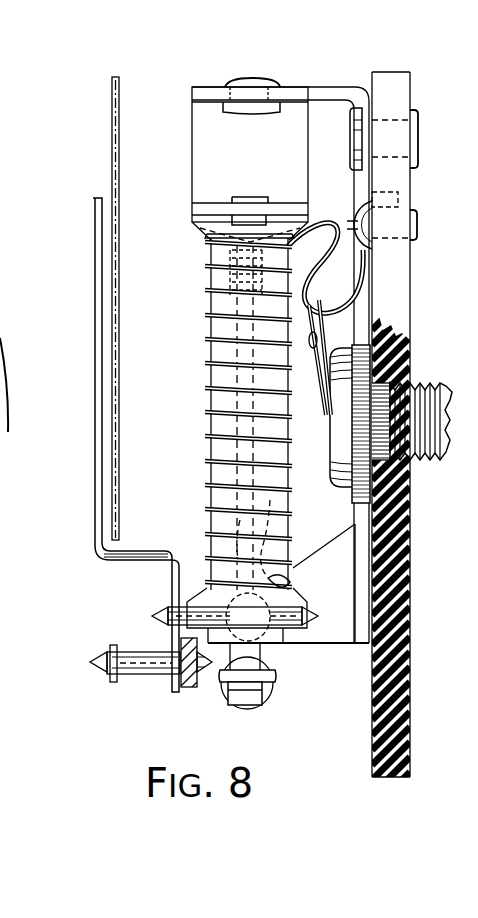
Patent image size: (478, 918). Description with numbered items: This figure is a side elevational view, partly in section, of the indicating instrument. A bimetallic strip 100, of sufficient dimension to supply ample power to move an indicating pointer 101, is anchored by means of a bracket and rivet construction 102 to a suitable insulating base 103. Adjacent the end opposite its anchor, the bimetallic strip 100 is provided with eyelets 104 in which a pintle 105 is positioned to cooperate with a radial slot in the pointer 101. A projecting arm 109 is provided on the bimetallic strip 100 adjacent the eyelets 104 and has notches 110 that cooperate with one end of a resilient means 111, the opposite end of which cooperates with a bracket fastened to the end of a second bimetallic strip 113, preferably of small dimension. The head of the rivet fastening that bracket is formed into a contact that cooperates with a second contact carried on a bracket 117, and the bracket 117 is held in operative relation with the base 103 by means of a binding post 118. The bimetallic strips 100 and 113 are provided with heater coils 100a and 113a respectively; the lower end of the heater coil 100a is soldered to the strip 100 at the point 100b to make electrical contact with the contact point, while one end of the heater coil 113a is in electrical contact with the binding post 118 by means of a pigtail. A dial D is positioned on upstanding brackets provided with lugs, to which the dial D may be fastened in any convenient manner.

The dial D is at (112, 148).
The bimetallic strip 100 is at (207, 333).
The heater coil 100a is at (218, 330).
The soldered connection point 100b is at (294, 582).
The indicating pointer 101 is at (93, 543).
The bracket and rivet construction 102 is at (334, 92).
The insulating base 103 is at (400, 262).
The eyelets 104 is at (196, 605).
The pintle 105 is at (152, 616).
The projecting arm 109 is at (248, 706).
The notches 110 is at (223, 690).
The resilient means 111 is at (274, 690).
The second bimetallic strip 113 is at (205, 385).
The heater coil 113a is at (205, 262).
The bracket 117 is at (333, 645).
The binding post 118 is at (334, 452).